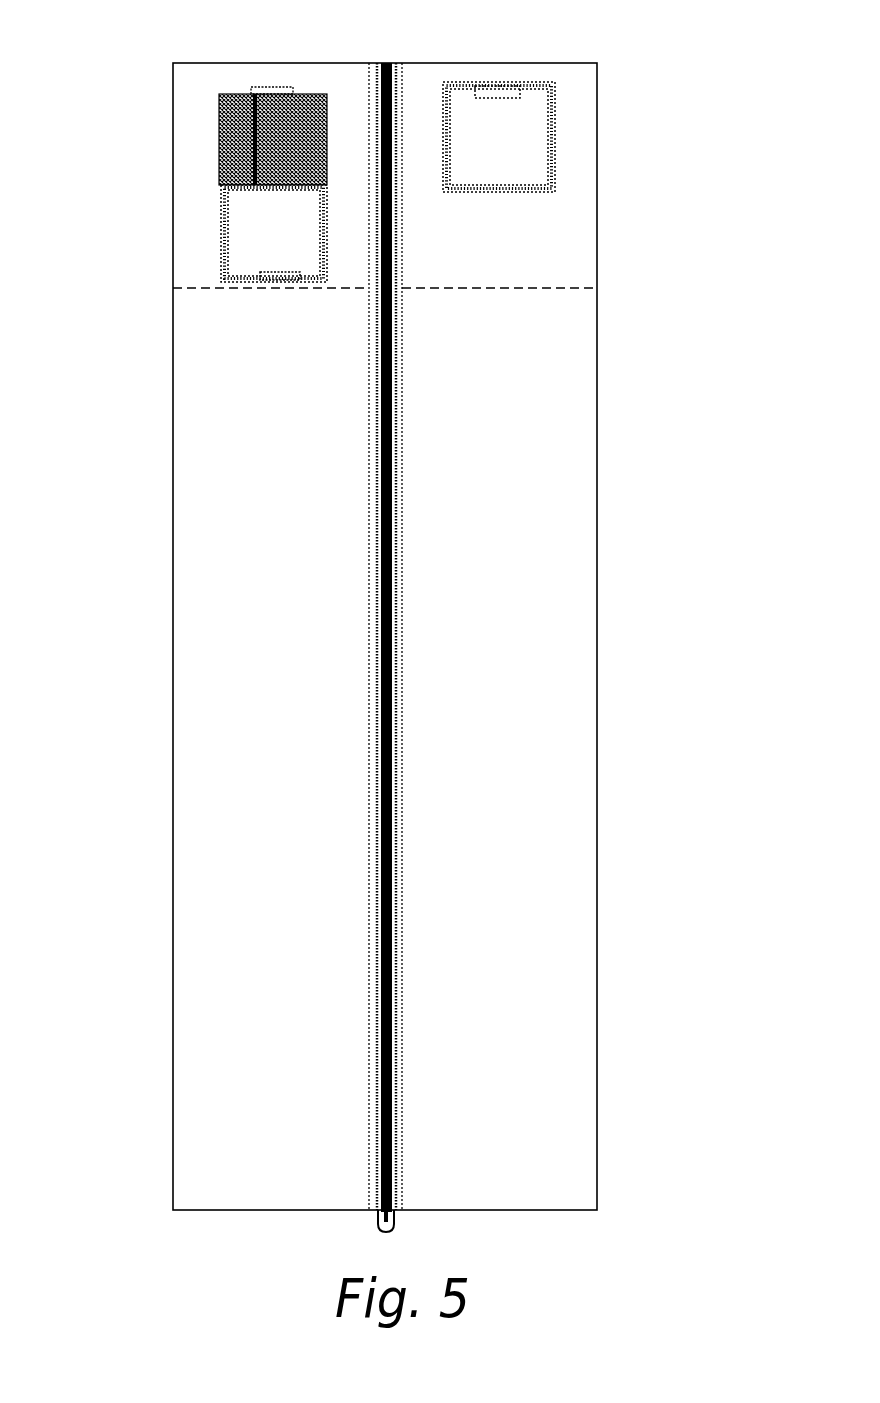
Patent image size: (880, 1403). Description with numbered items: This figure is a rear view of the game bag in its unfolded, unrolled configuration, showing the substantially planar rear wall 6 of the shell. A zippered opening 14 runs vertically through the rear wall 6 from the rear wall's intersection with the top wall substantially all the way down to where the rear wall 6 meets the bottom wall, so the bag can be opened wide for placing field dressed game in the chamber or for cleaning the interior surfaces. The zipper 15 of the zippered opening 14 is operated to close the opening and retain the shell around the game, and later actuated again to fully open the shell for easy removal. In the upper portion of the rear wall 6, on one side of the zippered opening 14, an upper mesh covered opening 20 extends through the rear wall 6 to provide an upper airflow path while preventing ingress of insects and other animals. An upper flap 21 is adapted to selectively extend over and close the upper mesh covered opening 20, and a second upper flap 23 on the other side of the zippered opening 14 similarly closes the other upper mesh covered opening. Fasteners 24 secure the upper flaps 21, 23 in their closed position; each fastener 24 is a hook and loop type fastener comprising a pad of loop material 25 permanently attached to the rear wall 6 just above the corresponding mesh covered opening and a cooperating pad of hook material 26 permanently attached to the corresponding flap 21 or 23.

The rear wall 6 is at (385, 636).
The zippered opening 14 is at (399, 582).
The zipper 15 is at (380, 1222).
The upper mesh covered opening 20 is at (235, 142).
The upper flap 21 is at (252, 208).
The upper flap 23 is at (503, 132).
The fastener 24 is at (512, 89).
The pad of loop material 25 is at (278, 94).
The pad of hook material 26 is at (279, 279).